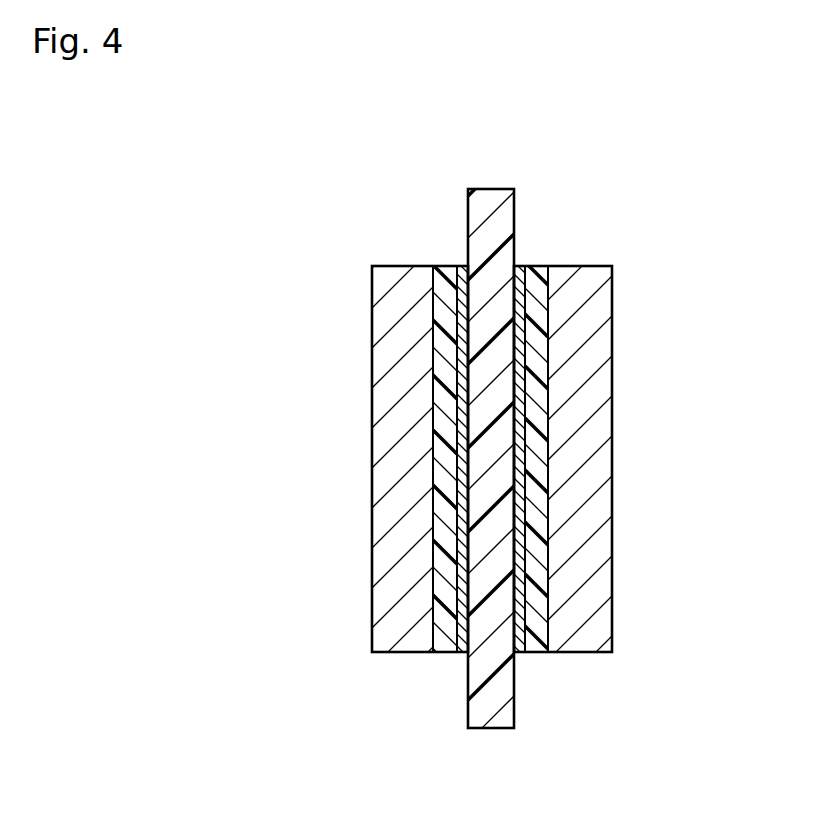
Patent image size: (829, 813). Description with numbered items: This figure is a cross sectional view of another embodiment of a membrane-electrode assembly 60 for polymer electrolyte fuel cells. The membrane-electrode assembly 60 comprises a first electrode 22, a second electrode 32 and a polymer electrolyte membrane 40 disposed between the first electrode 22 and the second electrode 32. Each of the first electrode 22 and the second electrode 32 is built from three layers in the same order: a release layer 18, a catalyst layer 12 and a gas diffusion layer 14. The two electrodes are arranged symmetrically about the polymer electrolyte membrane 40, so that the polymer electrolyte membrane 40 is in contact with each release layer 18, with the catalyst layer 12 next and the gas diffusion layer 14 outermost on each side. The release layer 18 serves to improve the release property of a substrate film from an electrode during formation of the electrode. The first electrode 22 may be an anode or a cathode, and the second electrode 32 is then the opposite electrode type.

The membrane-electrode assembly 60 is at (405, 205).
The first electrode 22 is at (460, 735).
The second electrode 32 is at (522, 735).
The gas diffusion layer 14 is at (405, 640).
The catalyst layer 12 is at (442, 640).
The release layer 18 is at (461, 640).
The polymer electrolyte membrane 40 is at (488, 717).